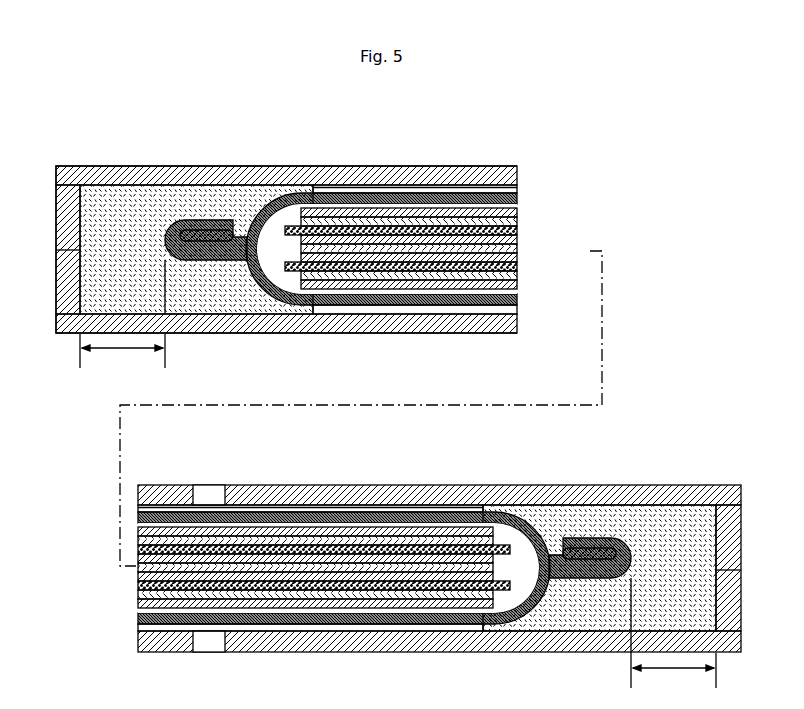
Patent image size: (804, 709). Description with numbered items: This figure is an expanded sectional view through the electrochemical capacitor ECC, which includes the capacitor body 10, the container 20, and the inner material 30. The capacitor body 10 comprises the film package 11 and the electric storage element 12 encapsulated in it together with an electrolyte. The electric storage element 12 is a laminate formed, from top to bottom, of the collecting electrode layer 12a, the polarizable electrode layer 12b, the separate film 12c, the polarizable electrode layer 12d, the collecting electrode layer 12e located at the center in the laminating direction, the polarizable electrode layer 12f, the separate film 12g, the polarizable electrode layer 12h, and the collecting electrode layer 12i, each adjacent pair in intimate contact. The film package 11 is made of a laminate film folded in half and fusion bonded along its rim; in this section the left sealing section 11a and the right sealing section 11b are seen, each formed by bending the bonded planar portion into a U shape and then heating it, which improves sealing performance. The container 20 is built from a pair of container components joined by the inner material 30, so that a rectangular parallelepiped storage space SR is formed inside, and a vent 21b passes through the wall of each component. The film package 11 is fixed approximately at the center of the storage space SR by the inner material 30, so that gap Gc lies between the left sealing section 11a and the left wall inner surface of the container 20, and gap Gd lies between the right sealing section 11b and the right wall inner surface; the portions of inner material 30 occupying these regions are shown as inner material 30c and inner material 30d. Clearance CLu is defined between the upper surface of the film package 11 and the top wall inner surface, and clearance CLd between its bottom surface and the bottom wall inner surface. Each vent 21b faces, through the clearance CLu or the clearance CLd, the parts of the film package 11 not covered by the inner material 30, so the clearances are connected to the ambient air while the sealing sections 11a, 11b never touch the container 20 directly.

The electrochemical capacitor ECC is at (80, 158).
The capacitor body 10 is at (363, 368).
The film package 11 is at (346, 193).
The left sealing section 11a is at (200, 212).
The right sealing section 11b is at (578, 530).
The electric storage element 12 is at (363, 360).
The collecting electrode layer 12a is at (509, 204).
The polarizable electrode layer 12b is at (509, 214).
The separate film 12c is at (509, 222).
The polarizable electrode layer 12d is at (509, 232).
The collecting electrode layer 12e is at (509, 240).
The polarizable electrode layer 12f is at (509, 250).
The separate film 12g is at (509, 258).
The polarizable electrode layer 12h is at (509, 268).
The collecting electrode layer 12i is at (509, 276).
The container 20 is at (415, 160).
The vent 21b is at (203, 485).
The inner material 30 is at (398, 371).
The inner material 30c is at (130, 196).
The inner material 30d is at (658, 520).
The clearance CLu is at (457, 182).
The clearance CLd is at (437, 304).
The storage space SR is at (489, 177).
The gap Gc is at (122, 355).
The gap Gd is at (674, 675).